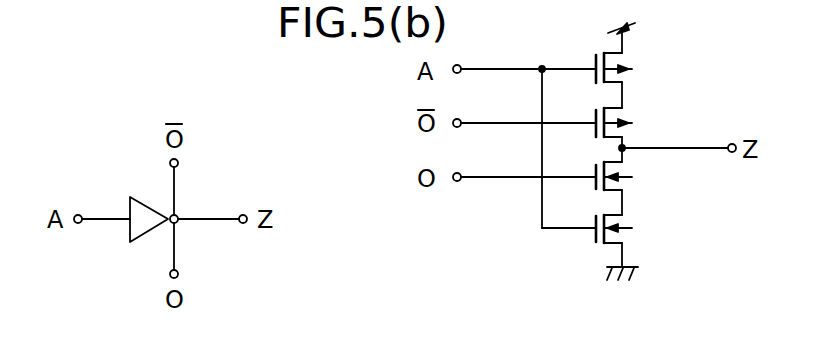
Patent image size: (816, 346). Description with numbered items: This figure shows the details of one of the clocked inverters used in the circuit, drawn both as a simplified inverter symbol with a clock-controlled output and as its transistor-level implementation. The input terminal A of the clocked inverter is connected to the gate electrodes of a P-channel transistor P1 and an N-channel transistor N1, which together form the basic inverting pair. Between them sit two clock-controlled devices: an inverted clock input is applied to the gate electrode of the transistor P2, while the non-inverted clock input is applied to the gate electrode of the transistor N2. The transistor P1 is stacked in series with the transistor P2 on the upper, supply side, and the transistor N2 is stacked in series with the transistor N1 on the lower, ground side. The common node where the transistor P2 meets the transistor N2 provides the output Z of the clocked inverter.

The P-channel transistor P1 is at (597, 60).
The transistor P2 is at (597, 116).
The N-channel transistor N1 is at (596, 221).
The transistor N2 is at (596, 169).